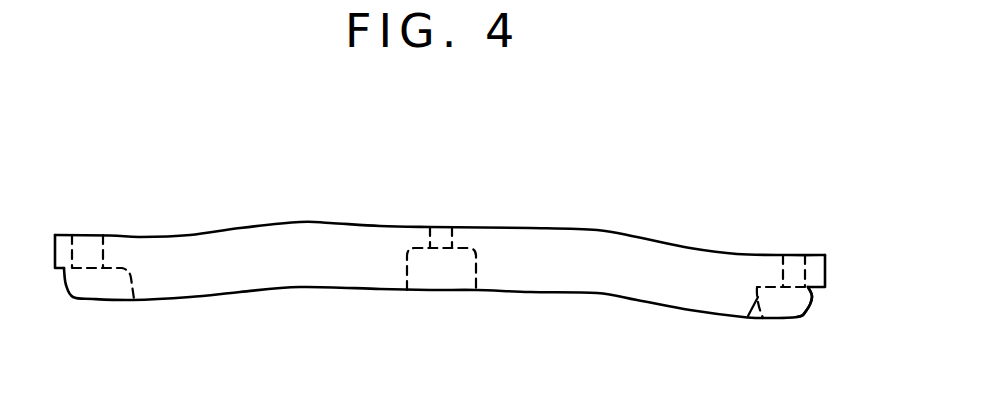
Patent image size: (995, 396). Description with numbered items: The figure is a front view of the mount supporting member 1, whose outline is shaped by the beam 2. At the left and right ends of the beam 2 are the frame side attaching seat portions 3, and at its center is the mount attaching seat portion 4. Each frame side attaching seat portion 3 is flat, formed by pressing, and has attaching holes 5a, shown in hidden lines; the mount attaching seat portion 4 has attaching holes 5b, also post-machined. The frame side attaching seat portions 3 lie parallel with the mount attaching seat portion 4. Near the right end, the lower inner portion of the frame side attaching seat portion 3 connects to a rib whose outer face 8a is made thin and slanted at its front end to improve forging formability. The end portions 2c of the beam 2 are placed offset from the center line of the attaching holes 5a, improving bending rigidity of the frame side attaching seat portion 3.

The mount supporting member 1 is at (448, 254).
The beam 2 is at (640, 303).
The end portions of the front and rear portions of the beam 2c is at (812, 305).
The frame side attaching seat portion 3 is at (72, 235).
The mount attaching seat portion 4 is at (477, 227).
The attaching holes 5a is at (90, 235).
The attaching holes 5b is at (440, 227).
The outer face of the rib 8a is at (763, 318).